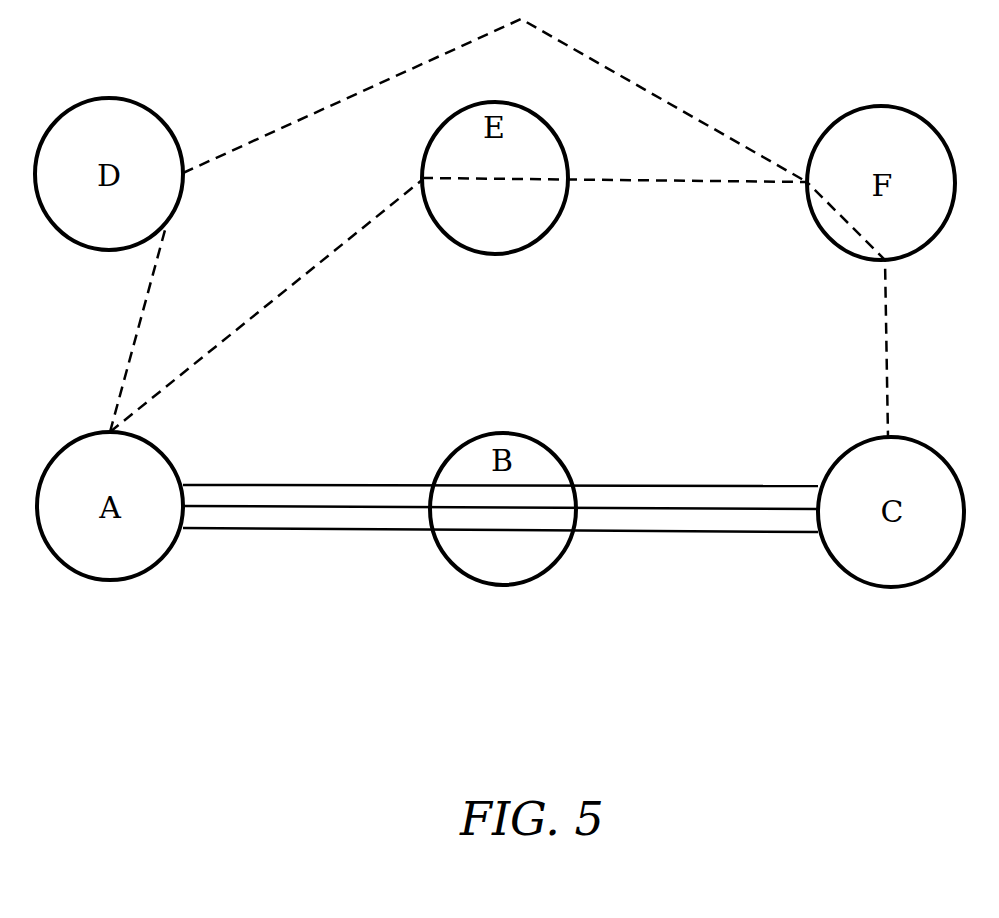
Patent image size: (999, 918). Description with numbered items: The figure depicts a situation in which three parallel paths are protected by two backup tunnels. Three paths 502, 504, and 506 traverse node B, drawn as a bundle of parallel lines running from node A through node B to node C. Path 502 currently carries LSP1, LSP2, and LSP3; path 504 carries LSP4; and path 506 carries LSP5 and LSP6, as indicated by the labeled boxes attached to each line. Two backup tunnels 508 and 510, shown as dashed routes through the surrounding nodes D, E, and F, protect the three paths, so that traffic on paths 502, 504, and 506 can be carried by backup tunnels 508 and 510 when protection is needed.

The path 502 is at (363, 487).
The path 504 is at (787, 510).
The path 506 is at (639, 533).
The backup tunnel 508 is at (372, 90).
The backup tunnel 510 is at (313, 270).